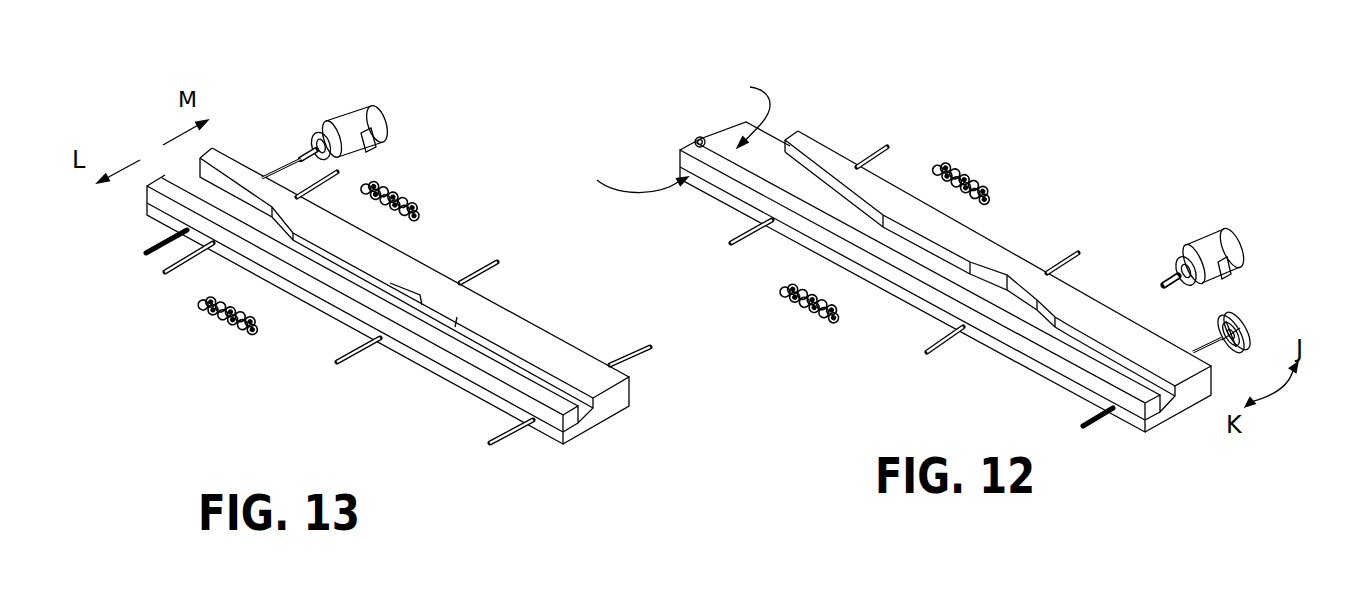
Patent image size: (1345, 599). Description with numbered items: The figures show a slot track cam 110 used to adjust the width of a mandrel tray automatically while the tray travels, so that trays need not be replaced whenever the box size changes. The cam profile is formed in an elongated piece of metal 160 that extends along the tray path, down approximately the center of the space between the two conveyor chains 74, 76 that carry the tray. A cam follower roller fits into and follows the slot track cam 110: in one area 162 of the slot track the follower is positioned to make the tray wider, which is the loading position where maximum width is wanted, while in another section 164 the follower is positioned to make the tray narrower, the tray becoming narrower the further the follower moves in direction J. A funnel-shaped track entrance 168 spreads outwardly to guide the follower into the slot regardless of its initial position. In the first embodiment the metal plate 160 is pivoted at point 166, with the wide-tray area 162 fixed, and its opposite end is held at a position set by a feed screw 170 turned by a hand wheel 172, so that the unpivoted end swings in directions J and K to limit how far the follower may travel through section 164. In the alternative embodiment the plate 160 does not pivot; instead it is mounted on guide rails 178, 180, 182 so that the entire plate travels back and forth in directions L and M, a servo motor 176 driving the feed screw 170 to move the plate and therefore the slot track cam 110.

In FIG. 12, the conveyor chain 74 is at (806, 310).
In FIG. 12, the conveyor chain 76 is at (973, 177).
In FIG. 13, the slot track cam 110 is at (586, 410).
In FIG. 12, the slot track cam 110 is at (1163, 398).
In FIG. 13, the elongated piece of metal 160 is at (537, 320).
In FIG. 12, the elongated piece of metal 160 is at (1092, 297).
In FIG. 12, the slot track area 162 is at (942, 242).
In FIG. 12, the slot track section 164 is at (1022, 263).
In FIG. 12, the pivot point 166 is at (696, 141).
In FIG. 12, the track entrance 168 is at (778, 157).
In FIG. 13, the feed screw 170 is at (148, 251).
In FIG. 12, the feed screw 170 is at (1103, 412).
In FIG. 12, the hand wheel 172 is at (1250, 320).
In FIG. 13, the servo motor 176 is at (338, 112).
In FIG. 12, the servo motor 176 is at (1228, 228).
In FIG. 13, the guide rail 178 is at (167, 277).
In FIG. 13, the guide rail 180 is at (357, 357).
In FIG. 13, the guide rail 182 is at (510, 446).